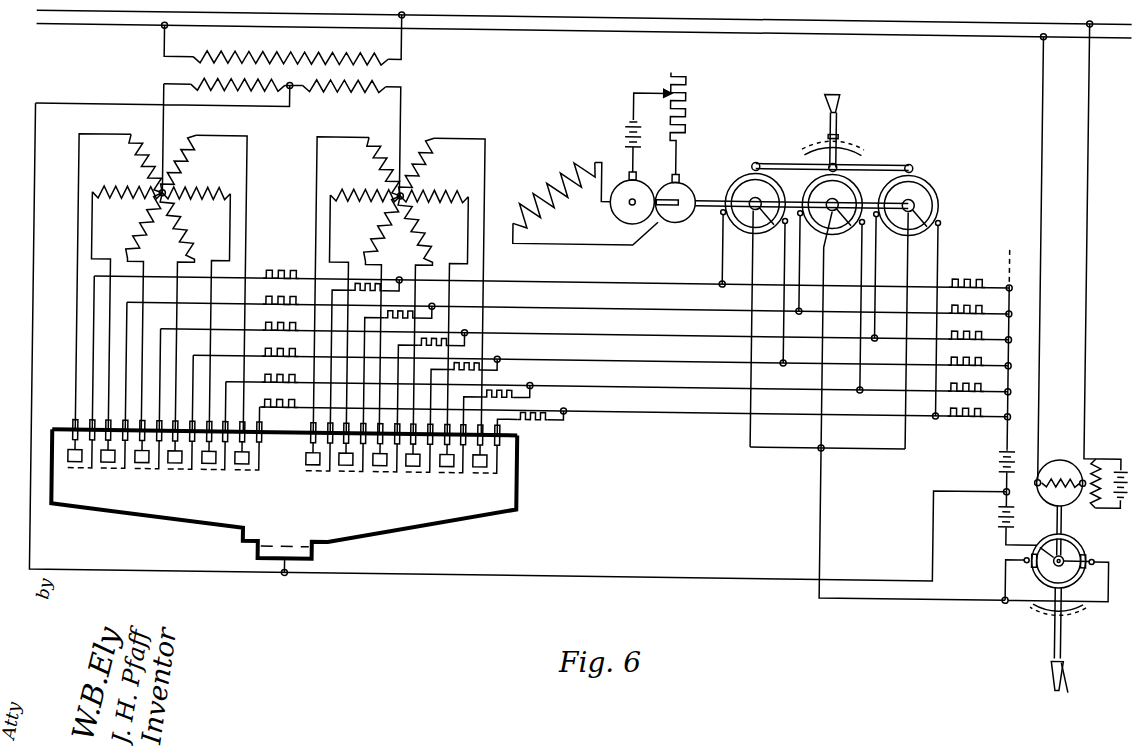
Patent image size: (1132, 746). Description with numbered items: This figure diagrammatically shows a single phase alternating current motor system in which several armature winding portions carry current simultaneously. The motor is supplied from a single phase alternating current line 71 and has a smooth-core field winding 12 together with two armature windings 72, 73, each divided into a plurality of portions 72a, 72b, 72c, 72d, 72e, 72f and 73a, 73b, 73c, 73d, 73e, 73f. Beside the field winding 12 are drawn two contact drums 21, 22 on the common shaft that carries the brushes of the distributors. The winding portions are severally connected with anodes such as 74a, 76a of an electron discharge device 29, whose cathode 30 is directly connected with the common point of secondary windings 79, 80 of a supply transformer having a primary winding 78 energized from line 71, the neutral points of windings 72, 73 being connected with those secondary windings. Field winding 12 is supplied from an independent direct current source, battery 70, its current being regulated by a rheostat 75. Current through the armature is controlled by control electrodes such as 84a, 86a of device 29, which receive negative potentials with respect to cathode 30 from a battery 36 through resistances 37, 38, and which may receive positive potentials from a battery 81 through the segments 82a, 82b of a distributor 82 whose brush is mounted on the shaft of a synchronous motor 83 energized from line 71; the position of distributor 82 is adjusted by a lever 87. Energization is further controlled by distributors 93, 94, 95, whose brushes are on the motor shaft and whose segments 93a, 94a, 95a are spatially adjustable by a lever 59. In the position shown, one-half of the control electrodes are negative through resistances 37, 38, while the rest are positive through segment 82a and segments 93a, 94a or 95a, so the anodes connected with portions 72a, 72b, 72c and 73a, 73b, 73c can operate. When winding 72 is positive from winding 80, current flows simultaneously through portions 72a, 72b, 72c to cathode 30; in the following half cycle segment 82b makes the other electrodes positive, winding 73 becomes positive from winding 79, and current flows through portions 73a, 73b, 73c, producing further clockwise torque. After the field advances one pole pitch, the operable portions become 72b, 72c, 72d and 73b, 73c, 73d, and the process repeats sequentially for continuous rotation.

The field winding 12 is at (537, 193).
The contact drum 21 is at (639, 181).
The contact drum 22 is at (690, 185).
The electron discharge device 29 is at (425, 518).
The cathode 30 is at (321, 553).
The battery 36 is at (988, 451).
The resistance 37 is at (957, 271).
The resistance 38 is at (267, 270).
The lever 59 is at (840, 97).
The battery 70 is at (622, 133).
The single phase alternating current line 71 is at (545, 29).
The armature winding 72 is at (161, 272).
The armature winding portion 72a is at (202, 190).
The armature winding portion 72b is at (187, 235).
The armature winding portion 72c is at (148, 232).
The armature winding portion 72d is at (124, 204).
The resistor 72e is at (127, 155).
The resistor 72f is at (189, 146).
The armature winding 73 is at (399, 275).
The armature winding portion 73a is at (441, 190).
The armature winding portion 73b is at (428, 236).
The armature winding portion 73c is at (385, 232).
The armature winding portion 73d is at (363, 205).
The resistor 73e is at (366, 157).
The resistor 73f is at (427, 145).
The anode 74a is at (210, 470).
The rheostat 75 is at (683, 103).
The anode 76a is at (447, 470).
The primary winding 78 is at (300, 58).
The secondary winding 79 is at (354, 96).
The secondary winding 80 is at (242, 94).
The battery 81 is at (990, 510).
The distributor 82 is at (1035, 522).
The distributor segment 82a is at (1035, 565).
The distributor segment 82b is at (1096, 548).
The synchronous motor 83 is at (1097, 495).
The control electrode 84a is at (230, 478).
The control electrode 86a is at (466, 478).
The lever 87 is at (1057, 669).
The distributor 93 is at (780, 183).
The distributor segment 93a is at (745, 229).
The distributor 94 is at (858, 182).
The distributor segment 94a is at (830, 229).
The distributor 95 is at (935, 181).
The distributor segment 95a is at (898, 227).